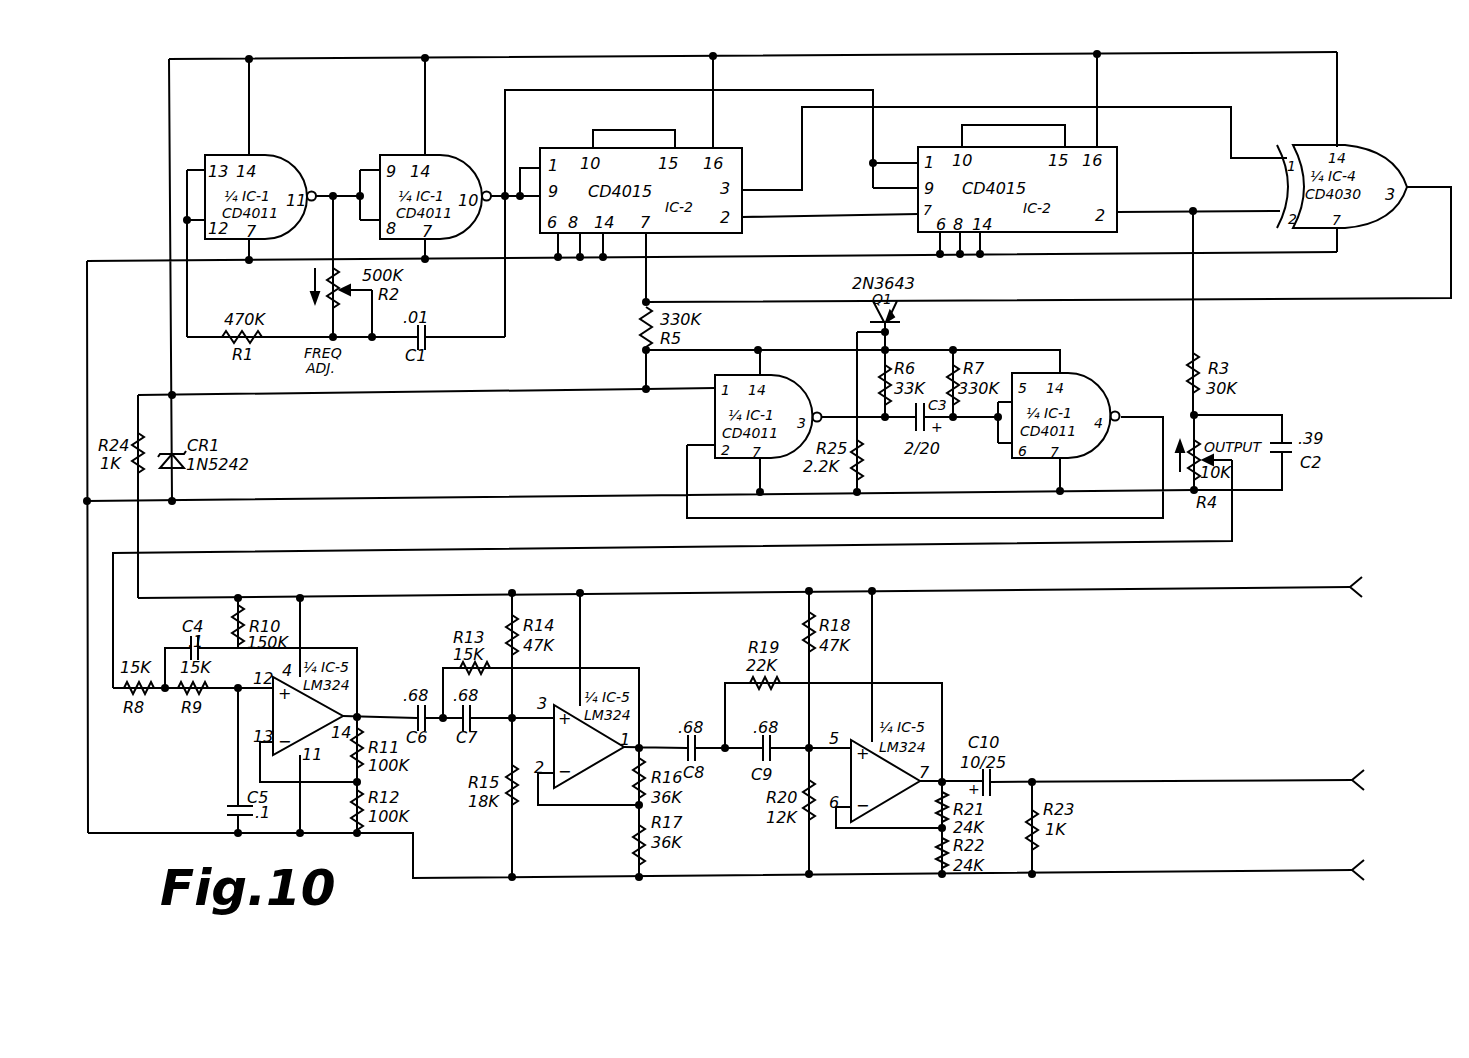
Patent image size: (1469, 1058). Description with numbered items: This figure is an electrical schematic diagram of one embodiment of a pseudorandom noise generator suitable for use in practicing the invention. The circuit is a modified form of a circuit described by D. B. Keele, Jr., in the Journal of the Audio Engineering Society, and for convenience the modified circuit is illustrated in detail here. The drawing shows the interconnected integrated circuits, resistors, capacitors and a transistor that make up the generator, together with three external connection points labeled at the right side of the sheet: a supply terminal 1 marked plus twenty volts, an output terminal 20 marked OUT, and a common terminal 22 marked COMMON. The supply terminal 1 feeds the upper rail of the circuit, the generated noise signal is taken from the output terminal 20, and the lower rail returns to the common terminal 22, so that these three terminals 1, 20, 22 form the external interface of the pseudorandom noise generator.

The +20V power supply terminal 1 is at (1381, 585).
The output terminal 20 is at (1370, 778).
The common terminal 22 is at (1389, 868).